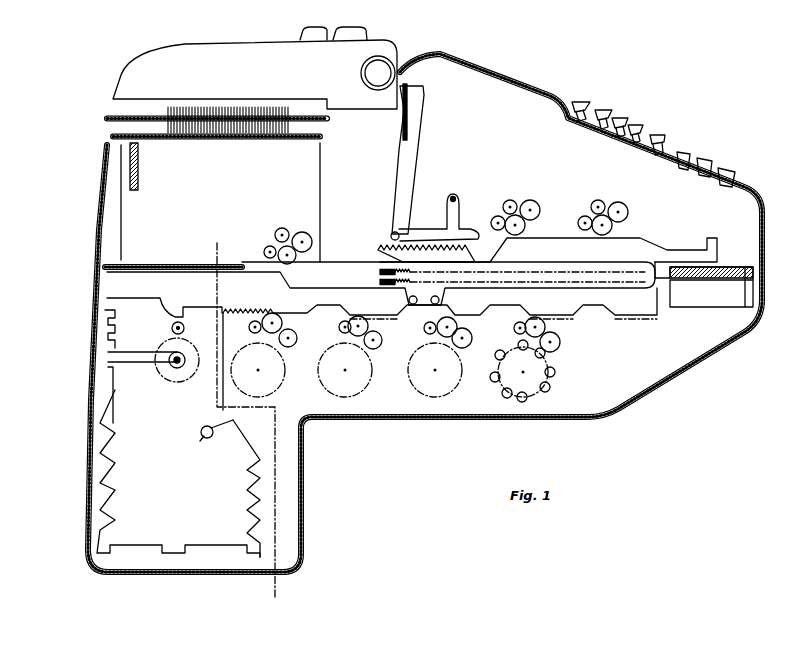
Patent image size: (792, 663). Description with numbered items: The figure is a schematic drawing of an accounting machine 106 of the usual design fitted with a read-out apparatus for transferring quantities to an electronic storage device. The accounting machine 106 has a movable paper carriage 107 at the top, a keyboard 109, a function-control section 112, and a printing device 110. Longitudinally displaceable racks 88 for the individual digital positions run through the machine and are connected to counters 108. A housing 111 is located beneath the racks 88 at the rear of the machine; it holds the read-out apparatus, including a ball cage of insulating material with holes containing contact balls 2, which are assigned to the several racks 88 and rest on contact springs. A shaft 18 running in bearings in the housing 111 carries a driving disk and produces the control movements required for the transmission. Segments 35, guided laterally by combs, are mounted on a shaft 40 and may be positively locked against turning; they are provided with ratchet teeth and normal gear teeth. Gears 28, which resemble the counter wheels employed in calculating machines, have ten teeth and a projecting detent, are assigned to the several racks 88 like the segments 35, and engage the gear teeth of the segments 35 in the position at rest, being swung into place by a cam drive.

The accounting machine 106 is at (500, 100).
The movable paper carriage 107 is at (147, 83).
The function-control section 112 is at (236, 141).
The counters 108 is at (285, 232).
The printing device 110 is at (423, 230).
The keyboard 109 is at (707, 170).
The racks 88 is at (612, 300).
The gears 28 is at (172, 328).
The shaft 40 is at (174, 365).
The segments 35 is at (187, 375).
The shaft 18 is at (203, 439).
The housing 111 is at (232, 516).
The contact balls 2 is at (217, 244).